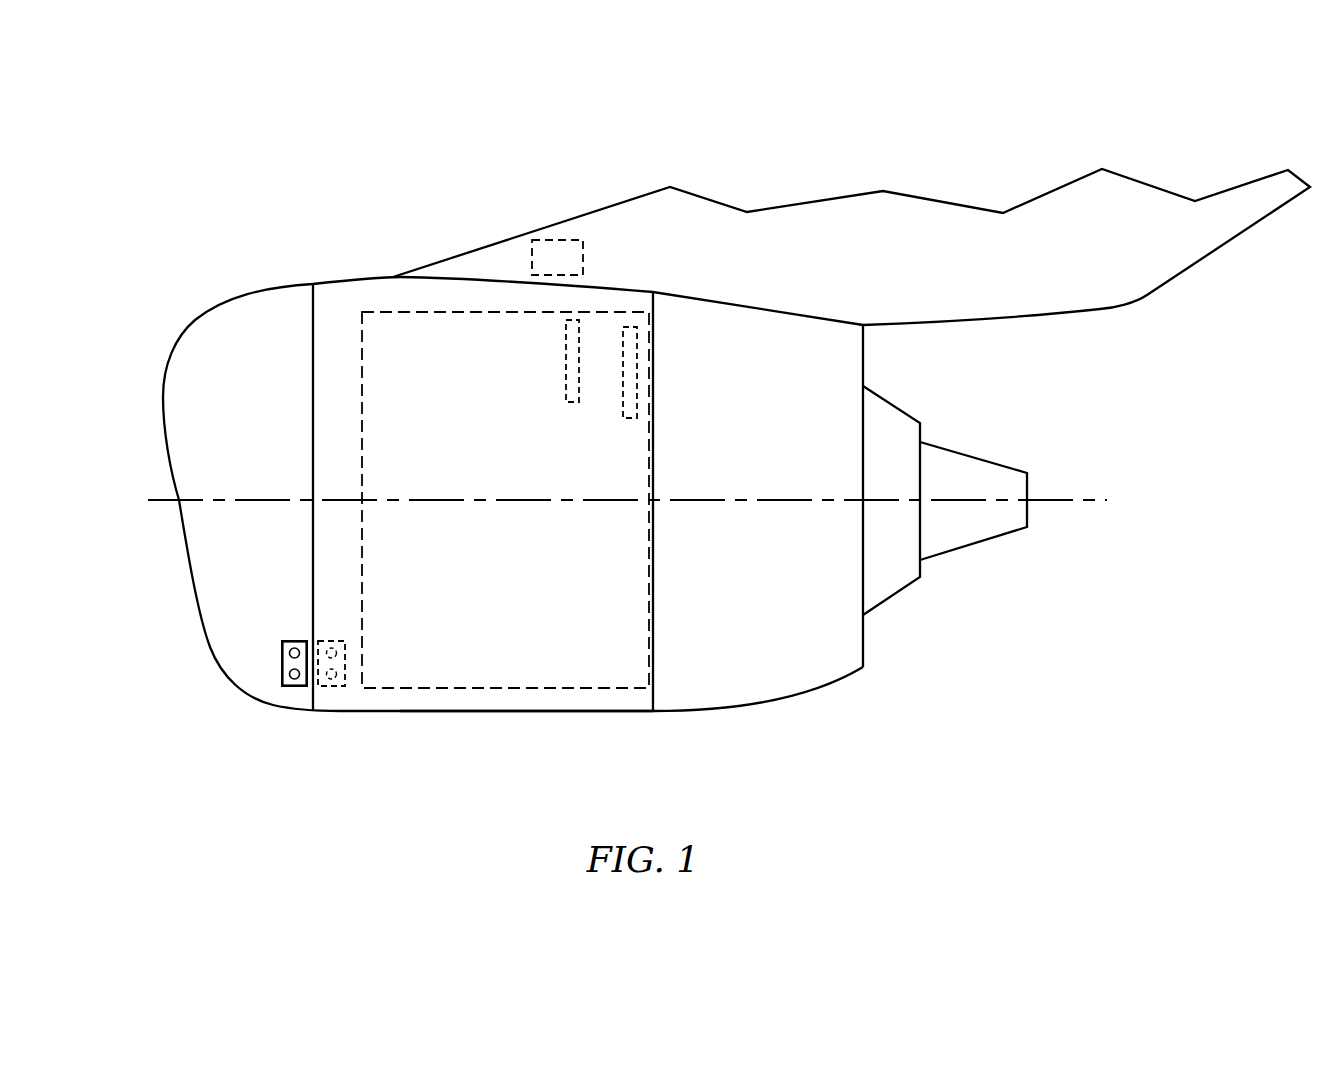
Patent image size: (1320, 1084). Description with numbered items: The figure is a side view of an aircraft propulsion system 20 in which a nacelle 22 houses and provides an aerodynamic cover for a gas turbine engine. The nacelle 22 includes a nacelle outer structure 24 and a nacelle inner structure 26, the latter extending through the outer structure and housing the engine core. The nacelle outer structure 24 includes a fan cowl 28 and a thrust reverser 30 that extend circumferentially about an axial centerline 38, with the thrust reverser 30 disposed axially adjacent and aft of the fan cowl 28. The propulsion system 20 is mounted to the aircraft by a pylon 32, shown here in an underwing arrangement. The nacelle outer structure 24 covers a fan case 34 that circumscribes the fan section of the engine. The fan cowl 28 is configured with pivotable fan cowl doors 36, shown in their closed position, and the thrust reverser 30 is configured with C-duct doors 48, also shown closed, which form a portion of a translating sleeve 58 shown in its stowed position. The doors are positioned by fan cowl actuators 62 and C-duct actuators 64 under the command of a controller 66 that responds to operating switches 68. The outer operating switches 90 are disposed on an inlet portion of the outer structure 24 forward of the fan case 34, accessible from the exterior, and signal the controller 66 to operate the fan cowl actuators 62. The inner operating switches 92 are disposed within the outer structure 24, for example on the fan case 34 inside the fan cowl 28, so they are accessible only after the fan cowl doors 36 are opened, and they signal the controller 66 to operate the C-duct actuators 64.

The aircraft propulsion system 20 is at (163, 199).
The nacelle 22 is at (339, 262).
The nacelle outer structure 24 is at (370, 730).
The nacelle inner structure 26 is at (901, 611).
The fan cowl 28 is at (434, 282).
The thrust reverser 30 is at (780, 327).
The pylon 32 is at (684, 215).
The fan case 34 is at (463, 688).
The fan cowl doors 36 is at (535, 698).
The axial centerline 38 is at (1107, 500).
The C-duct doors 48 is at (815, 672).
The translating sleeve 58 is at (690, 668).
The fan cowl actuator 62 is at (572, 355).
The C-duct actuator 64 is at (630, 383).
The controller 66 is at (563, 244).
The operating switches 68 is at (290, 622).
The outer operating switches 90 is at (293, 688).
The inner operating switches 92 is at (332, 688).